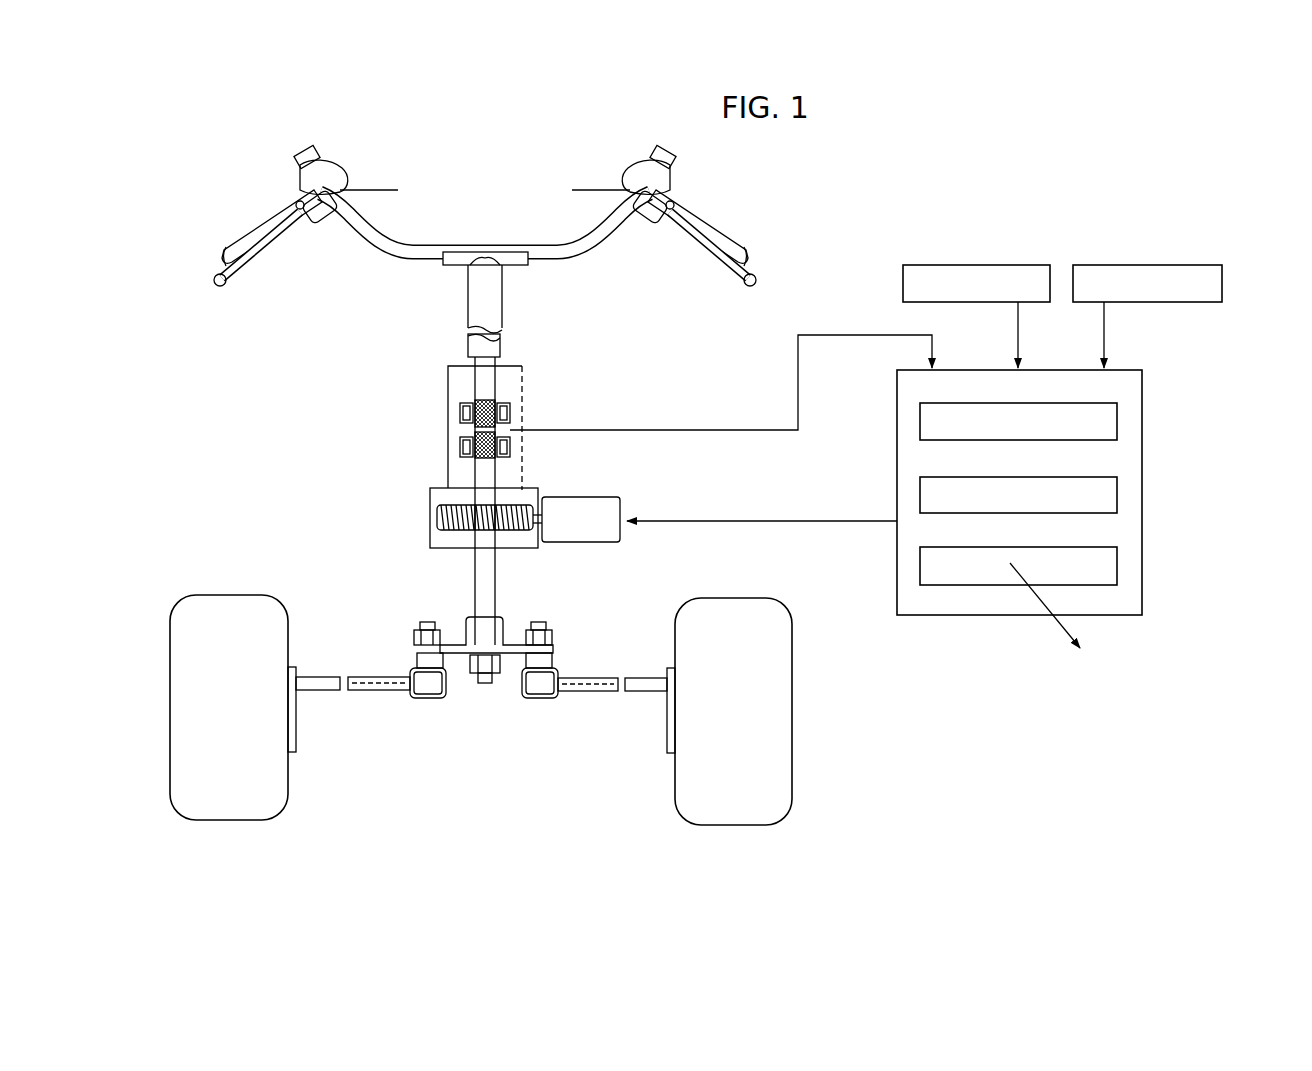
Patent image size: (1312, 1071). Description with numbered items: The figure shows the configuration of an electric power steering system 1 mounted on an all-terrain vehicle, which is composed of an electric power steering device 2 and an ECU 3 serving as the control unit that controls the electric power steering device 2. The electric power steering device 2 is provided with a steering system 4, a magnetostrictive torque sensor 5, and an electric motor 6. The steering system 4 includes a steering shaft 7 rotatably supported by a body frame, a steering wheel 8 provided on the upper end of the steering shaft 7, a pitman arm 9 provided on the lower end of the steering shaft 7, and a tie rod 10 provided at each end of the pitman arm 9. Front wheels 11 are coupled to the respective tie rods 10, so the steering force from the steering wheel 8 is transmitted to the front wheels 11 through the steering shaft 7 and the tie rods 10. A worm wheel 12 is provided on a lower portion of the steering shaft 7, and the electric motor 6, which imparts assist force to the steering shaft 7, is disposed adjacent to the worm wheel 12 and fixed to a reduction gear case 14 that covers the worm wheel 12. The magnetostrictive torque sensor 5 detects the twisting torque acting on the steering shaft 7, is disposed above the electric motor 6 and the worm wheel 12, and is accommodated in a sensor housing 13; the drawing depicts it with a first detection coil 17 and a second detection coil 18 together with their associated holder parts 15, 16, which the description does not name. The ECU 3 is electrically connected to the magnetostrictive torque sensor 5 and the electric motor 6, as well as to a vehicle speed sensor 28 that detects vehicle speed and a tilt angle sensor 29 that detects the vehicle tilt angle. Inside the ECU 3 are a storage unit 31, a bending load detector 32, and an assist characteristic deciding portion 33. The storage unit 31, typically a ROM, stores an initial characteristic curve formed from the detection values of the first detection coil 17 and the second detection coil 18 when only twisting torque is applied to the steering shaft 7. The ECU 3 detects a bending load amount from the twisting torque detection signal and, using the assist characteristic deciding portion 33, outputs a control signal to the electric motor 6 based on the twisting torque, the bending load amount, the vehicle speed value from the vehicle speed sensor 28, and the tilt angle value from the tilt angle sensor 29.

The electric power steering system 1 is at (1093, 148).
The electric power steering device 2 is at (305, 130).
The ECU 3 is at (1143, 362).
The steering system 4 is at (447, 325).
The magnetostrictive torque sensor 5 is at (521, 412).
The electric motor 6 is at (597, 497).
The steering shaft 7 is at (497, 305).
The steering wheel 8 is at (427, 240).
The pitman arm 9 is at (455, 645).
The tie rod 10 is at (385, 677).
The front wheels 11 is at (215, 603).
The worm wheel 12 is at (437, 533).
The sensor housing 13 is at (448, 382).
The reduction gear case 14 is at (437, 488).
The upper gauge holder 15 is at (471, 410).
The lower gauge holder 16 is at (471, 445).
The first detection coil 17 is at (505, 403).
The second detection coil 18 is at (507, 450).
The vehicle speed sensor 28 is at (1153, 265).
The tilt angle sensor 29 is at (962, 265).
The storage unit 31 is at (1117, 420).
The bending load detector 32 is at (1117, 495).
The assist characteristic deciding portion 33 is at (1117, 562).